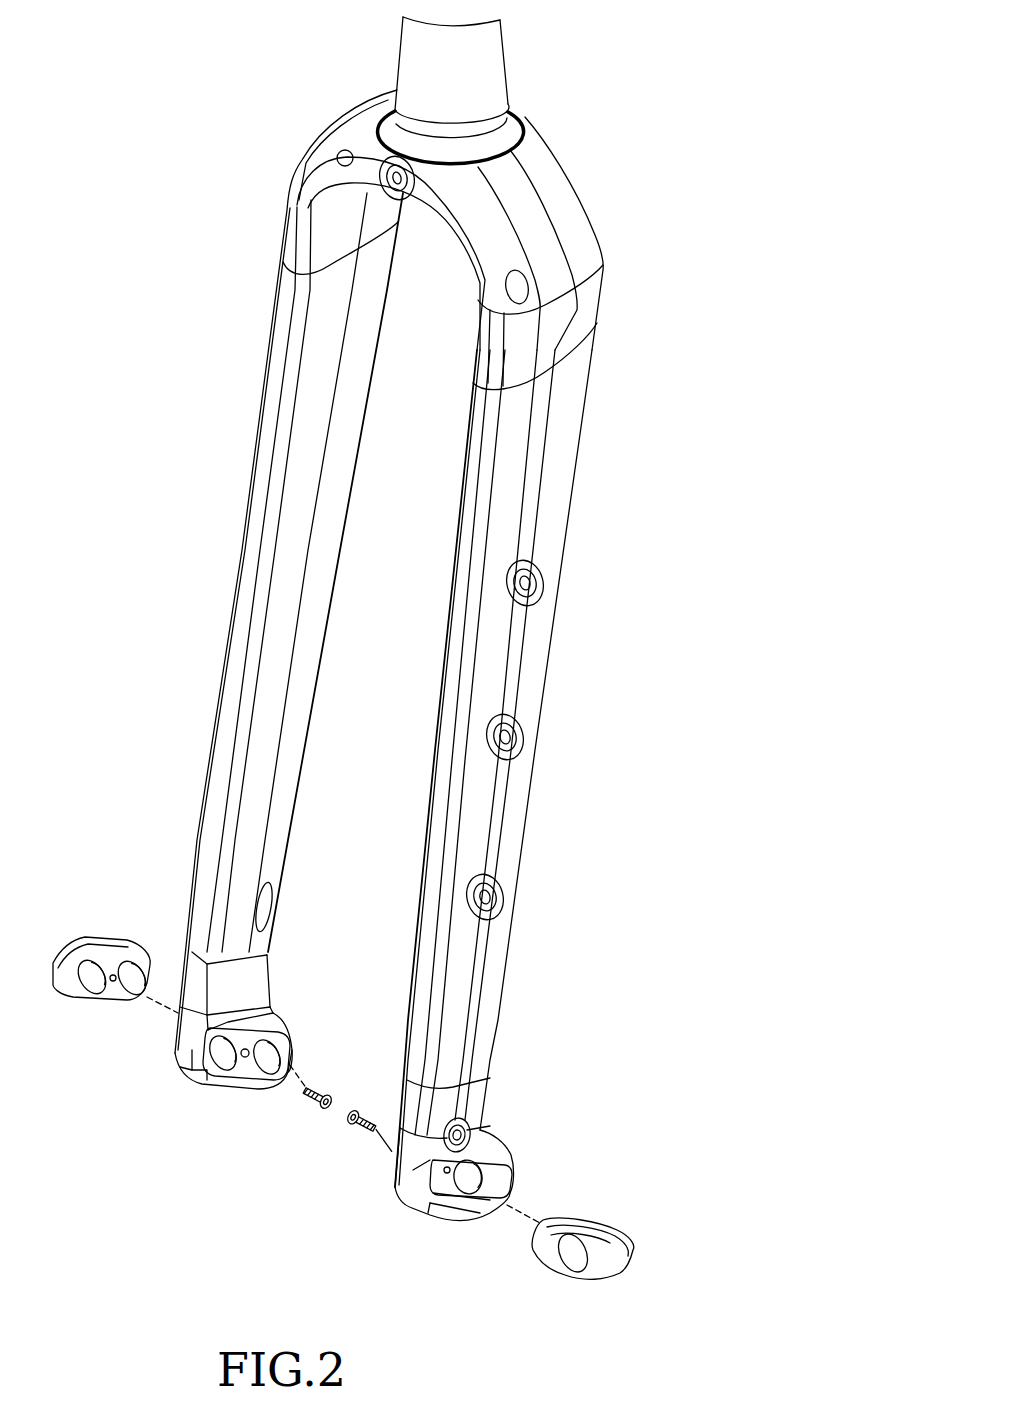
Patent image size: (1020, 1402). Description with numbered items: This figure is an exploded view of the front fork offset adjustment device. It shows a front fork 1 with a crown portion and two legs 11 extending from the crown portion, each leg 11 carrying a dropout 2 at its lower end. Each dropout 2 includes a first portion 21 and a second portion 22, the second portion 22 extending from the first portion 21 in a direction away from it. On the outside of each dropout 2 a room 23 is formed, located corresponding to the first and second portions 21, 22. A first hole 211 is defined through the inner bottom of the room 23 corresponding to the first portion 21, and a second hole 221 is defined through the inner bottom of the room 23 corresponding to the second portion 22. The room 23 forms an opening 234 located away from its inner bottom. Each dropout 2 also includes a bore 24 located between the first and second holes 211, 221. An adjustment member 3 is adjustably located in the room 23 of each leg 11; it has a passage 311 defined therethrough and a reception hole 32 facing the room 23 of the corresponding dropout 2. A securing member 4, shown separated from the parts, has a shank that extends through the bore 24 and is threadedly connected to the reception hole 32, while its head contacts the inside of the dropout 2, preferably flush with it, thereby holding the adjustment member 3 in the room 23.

The front fork 1 is at (439, 602).
The leg 11 is at (570, 498).
The dropout 2 is at (475, 1171).
The first portion 21 is at (354, 1122).
The first hole 211 is at (235, 1067).
The second portion 22 is at (293, 1053).
The second hole 221 is at (262, 1065).
The room 23 is at (448, 1206).
The opening 234 is at (425, 1213).
The bore 24 is at (246, 1050).
The adjustment member 3 is at (369, 1144).
The passage 311 is at (573, 1253).
The reception hole 32 is at (113, 975).
The securing member 4 is at (347, 1122).